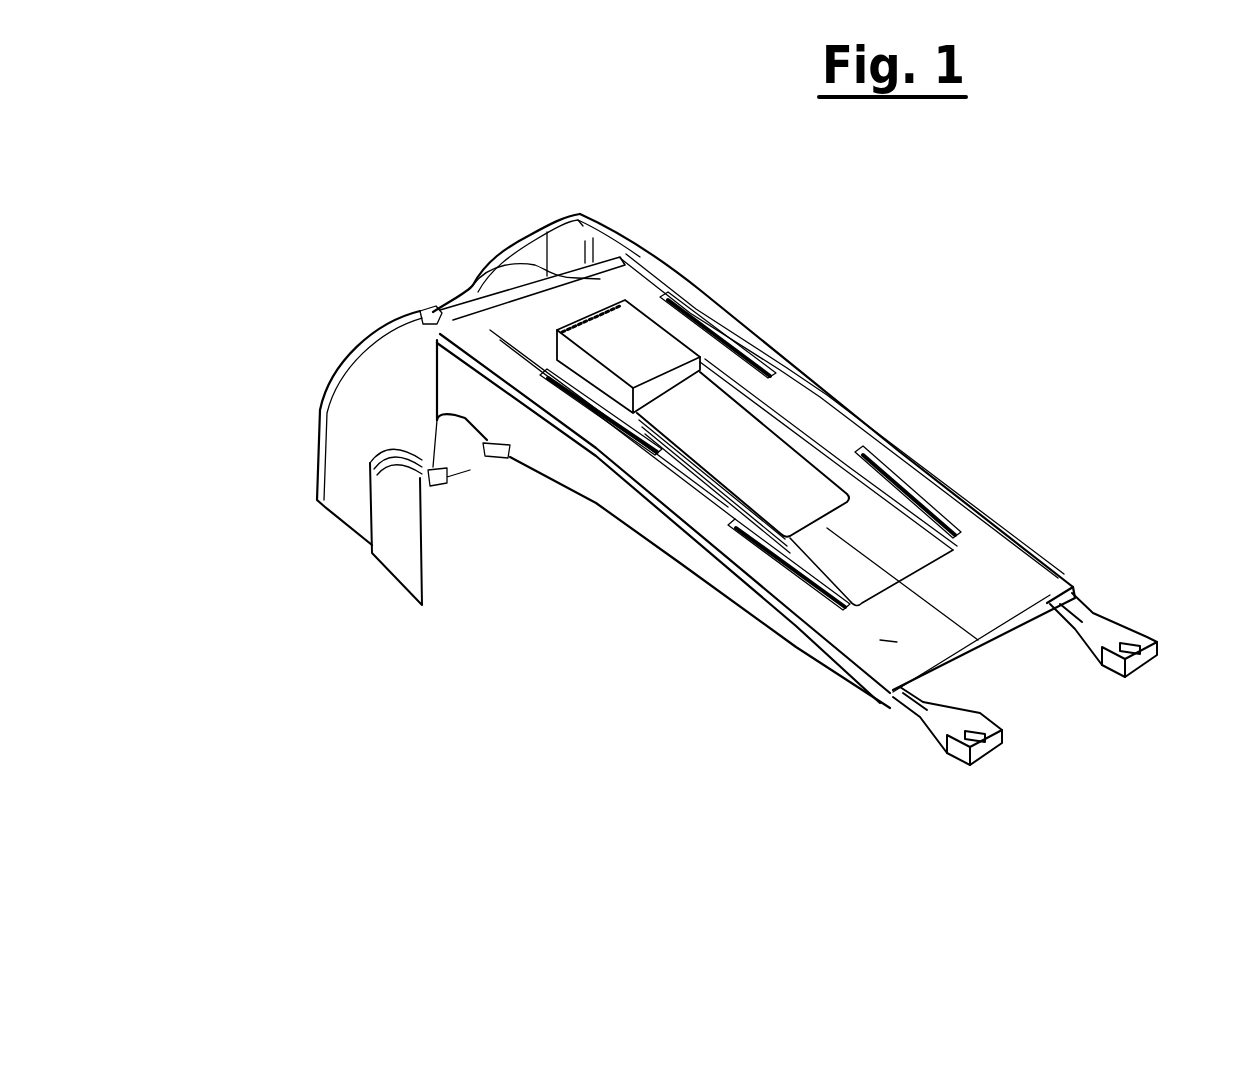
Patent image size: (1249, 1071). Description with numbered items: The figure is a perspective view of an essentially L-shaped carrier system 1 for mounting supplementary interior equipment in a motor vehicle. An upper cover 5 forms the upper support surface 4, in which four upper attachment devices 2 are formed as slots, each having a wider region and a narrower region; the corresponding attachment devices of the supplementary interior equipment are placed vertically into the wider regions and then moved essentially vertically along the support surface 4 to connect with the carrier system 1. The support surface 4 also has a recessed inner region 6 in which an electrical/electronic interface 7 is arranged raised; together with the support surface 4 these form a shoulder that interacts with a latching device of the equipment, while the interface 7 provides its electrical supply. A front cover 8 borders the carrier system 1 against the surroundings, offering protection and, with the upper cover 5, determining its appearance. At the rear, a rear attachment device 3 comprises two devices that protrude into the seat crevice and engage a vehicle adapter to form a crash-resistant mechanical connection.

The carrier system 1 is at (462, 690).
The upper attachment device 2 is at (725, 331).
The rear attachment device 3 is at (960, 715).
The upper support surface 4 is at (897, 642).
The upper cover 5 is at (633, 265).
The recessed inner region 6 is at (827, 570).
The electrical/electronic interface 7 is at (598, 340).
The front cover 8 is at (390, 388).